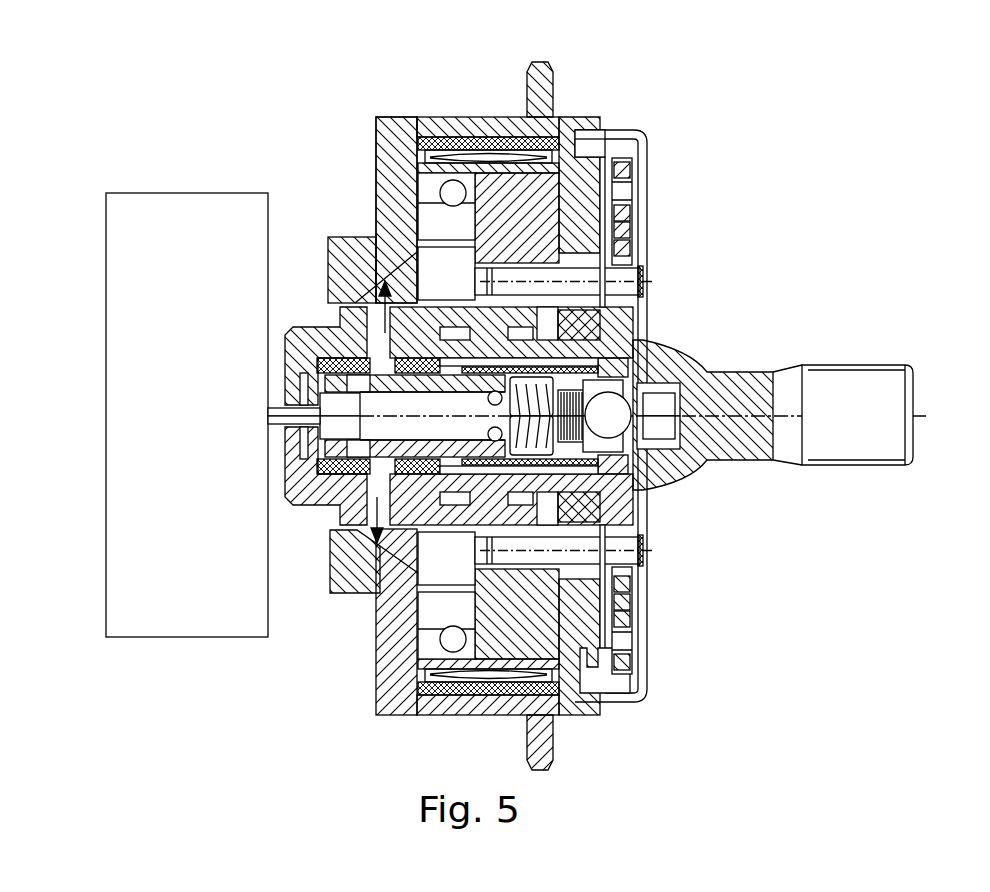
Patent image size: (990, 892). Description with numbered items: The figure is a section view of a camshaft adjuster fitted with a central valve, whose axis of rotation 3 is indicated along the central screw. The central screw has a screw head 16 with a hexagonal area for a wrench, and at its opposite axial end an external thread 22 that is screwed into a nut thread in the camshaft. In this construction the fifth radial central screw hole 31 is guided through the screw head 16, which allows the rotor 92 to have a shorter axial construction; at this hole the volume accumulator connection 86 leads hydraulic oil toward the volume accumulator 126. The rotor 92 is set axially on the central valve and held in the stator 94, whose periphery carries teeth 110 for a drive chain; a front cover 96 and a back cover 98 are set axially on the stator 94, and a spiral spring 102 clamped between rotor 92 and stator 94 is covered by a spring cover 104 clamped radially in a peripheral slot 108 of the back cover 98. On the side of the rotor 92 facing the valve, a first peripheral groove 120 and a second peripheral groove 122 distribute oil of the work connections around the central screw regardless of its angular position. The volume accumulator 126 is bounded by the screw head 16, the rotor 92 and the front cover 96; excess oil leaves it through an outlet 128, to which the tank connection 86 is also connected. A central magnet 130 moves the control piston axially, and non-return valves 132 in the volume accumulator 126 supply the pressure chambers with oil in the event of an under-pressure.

The axis of rotation 3 is at (925, 415).
The screw head 16 is at (330, 338).
The external thread 22 is at (850, 365).
The fifth radial central screw hole 31 is at (340, 305).
The volume accumulator connection 86 is at (348, 290).
The rotor 92 is at (598, 650).
The stator 94 is at (450, 714).
The front cover 96 is at (393, 130).
The back cover 98 is at (628, 210).
The spiral spring 102 is at (633, 233).
The spring cover 104 is at (645, 270).
The peripheral slot 108 is at (603, 140).
The teeth 110 is at (548, 68).
The first peripheral groove 120 is at (527, 333).
The second peripheral groove 122 is at (478, 283).
The volume accumulator 126 is at (415, 258).
The outlet 128 is at (600, 308).
The central magnet 130 is at (178, 195).
The non-return valves 132 is at (457, 190).